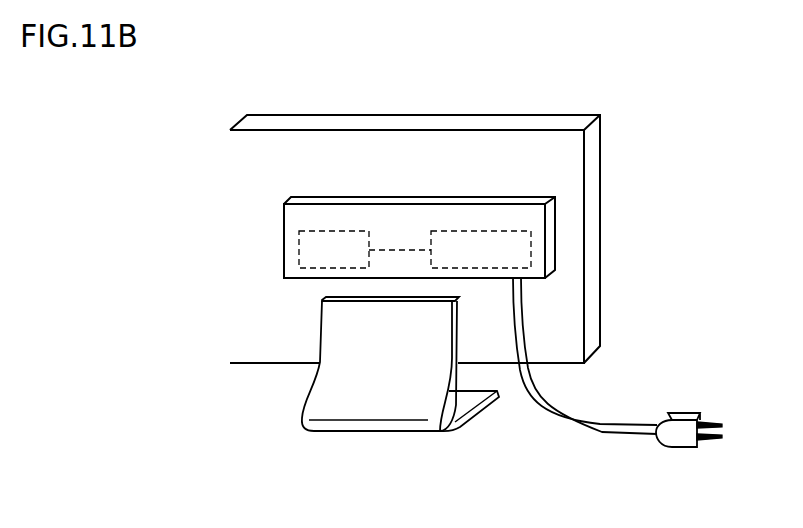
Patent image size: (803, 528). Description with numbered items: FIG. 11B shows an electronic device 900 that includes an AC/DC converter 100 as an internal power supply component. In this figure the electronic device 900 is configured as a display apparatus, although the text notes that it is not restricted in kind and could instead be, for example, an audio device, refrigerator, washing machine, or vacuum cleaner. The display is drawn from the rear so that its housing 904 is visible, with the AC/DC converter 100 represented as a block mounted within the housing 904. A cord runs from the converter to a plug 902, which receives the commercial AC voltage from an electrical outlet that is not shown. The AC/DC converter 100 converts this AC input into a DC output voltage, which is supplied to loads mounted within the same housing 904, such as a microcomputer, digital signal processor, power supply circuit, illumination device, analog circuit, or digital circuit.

The electronic device 900 is at (623, 137).
The housing 904 is at (472, 148).
The AC/DC converter 100 is at (515, 252).
The plug 902 is at (673, 443).